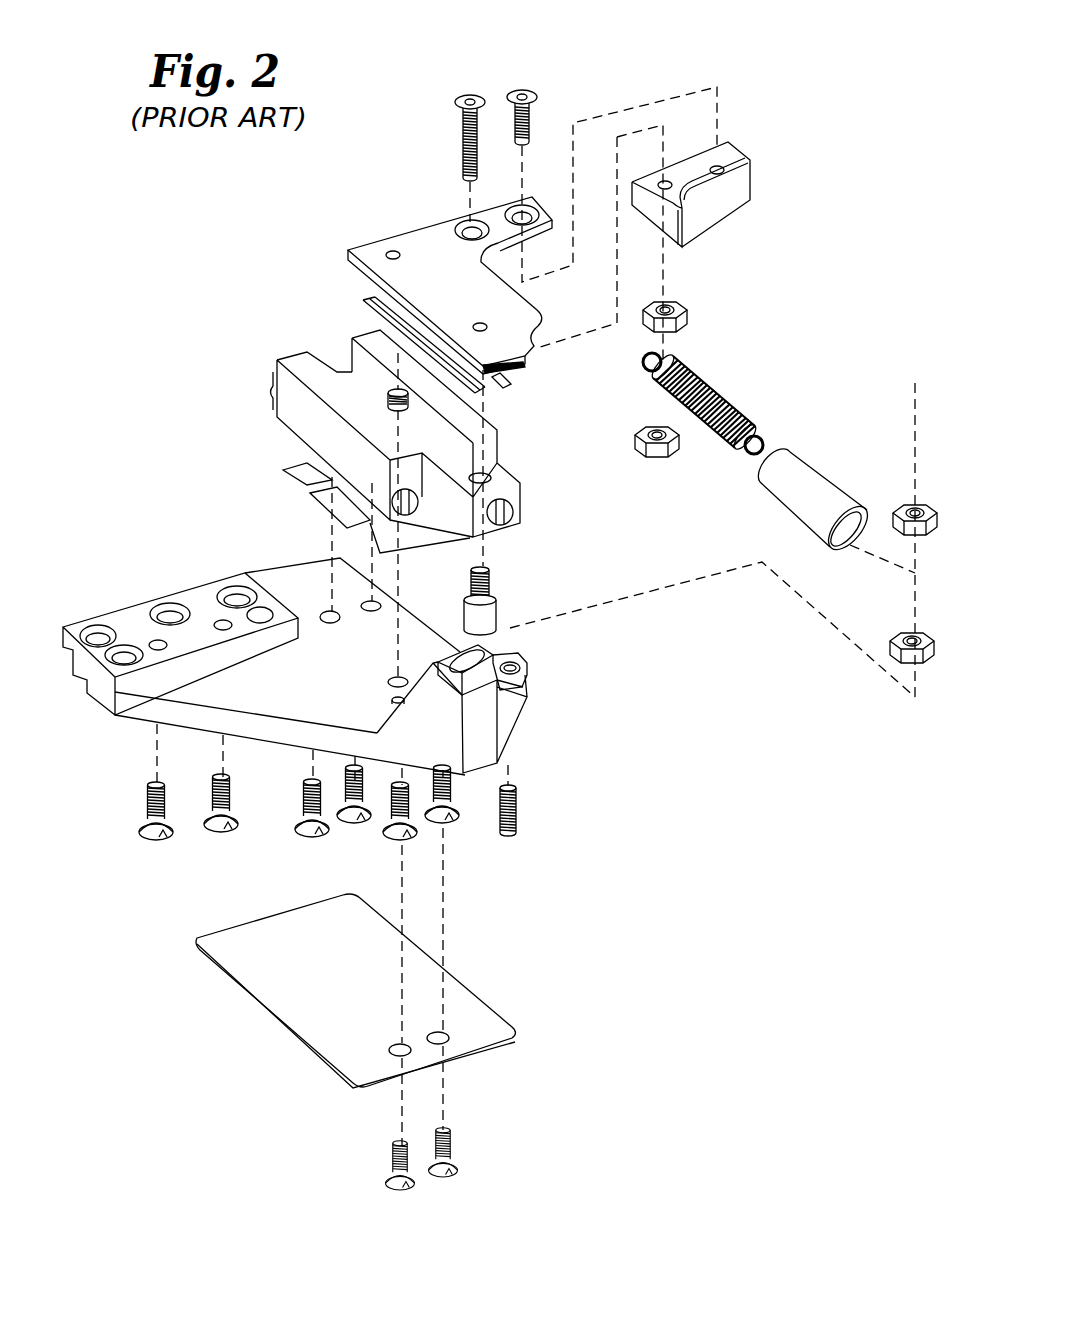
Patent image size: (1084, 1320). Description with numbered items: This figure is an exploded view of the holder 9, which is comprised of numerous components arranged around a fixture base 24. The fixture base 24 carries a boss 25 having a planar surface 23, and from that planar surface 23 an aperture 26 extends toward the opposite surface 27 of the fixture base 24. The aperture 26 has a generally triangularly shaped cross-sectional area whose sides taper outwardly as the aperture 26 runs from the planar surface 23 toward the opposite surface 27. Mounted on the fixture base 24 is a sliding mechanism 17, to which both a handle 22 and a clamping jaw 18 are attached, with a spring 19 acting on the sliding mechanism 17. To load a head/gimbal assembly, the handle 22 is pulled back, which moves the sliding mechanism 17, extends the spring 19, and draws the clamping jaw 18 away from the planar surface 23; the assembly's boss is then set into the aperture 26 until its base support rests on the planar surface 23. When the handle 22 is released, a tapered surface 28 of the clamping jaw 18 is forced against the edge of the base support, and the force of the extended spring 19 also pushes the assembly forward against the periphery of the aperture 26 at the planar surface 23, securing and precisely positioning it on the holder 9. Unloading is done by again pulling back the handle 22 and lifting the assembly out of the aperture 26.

The holder 9 is at (263, 292).
The sliding mechanism 17 is at (295, 426).
The clamping jaw 18 is at (523, 357).
The spring 19 is at (712, 383).
The handle 22 is at (745, 191).
The planar surface 23 is at (487, 660).
The fixture base 24 is at (128, 713).
The boss 25 is at (490, 682).
The aperture 26 is at (477, 663).
The opposite surface 27 is at (517, 725).
The tapered surface 28 is at (520, 363).